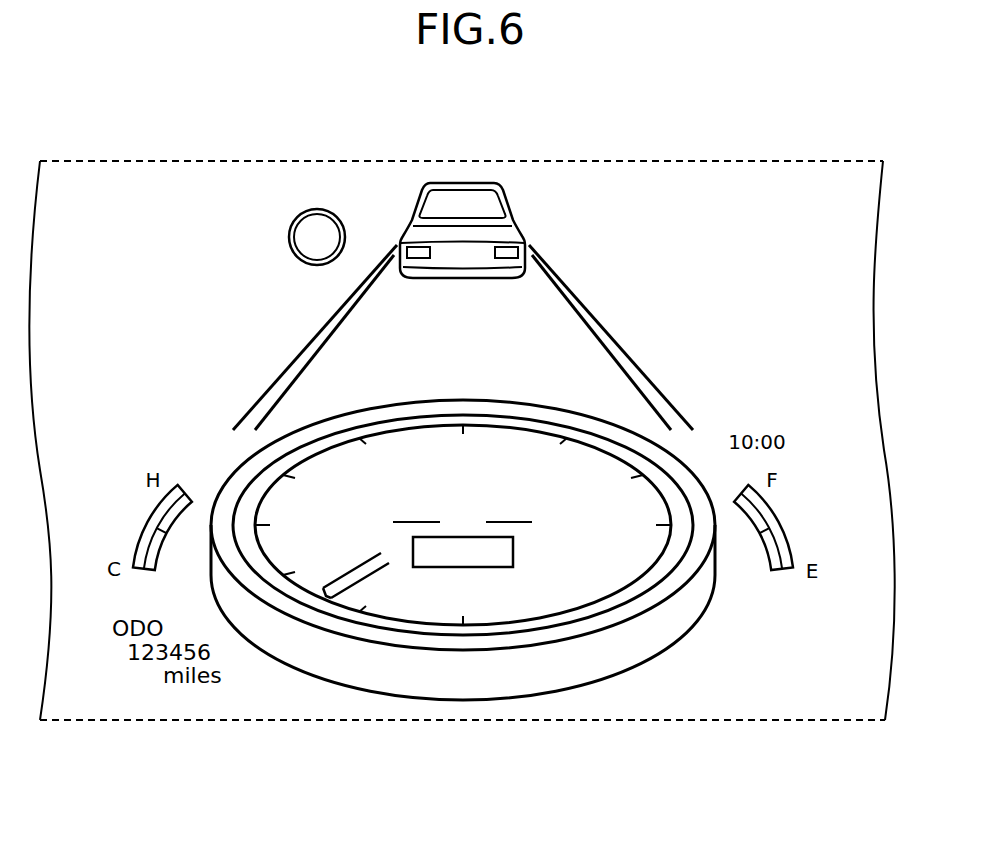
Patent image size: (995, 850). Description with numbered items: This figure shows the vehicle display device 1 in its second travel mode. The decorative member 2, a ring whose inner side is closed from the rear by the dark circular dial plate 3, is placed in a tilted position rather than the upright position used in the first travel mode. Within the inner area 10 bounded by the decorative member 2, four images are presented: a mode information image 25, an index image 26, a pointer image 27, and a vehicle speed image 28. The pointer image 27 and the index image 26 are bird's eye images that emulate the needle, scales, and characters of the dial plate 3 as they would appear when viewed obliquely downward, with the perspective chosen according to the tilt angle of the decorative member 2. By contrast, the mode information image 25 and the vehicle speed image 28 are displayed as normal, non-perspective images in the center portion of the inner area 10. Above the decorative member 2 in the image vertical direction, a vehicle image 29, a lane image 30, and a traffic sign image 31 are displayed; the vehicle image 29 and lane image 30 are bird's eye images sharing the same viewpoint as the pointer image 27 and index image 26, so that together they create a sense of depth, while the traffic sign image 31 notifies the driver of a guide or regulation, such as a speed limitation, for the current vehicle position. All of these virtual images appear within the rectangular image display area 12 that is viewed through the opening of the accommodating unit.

The vehicle display device 1 is at (181, 153).
The decorative member 2 is at (686, 452).
The dial plate 3 is at (587, 463).
The inner area 10 is at (335, 466).
The image display area 12 is at (713, 160).
The mode information image 25 is at (513, 553).
The index image 26 is at (312, 522).
The pointer image 27 is at (352, 587).
The vehicle speed image 28 is at (516, 493).
The vehicle image 29 is at (463, 183).
The lane image 30 is at (577, 300).
The traffic sign image 31 is at (317, 208).